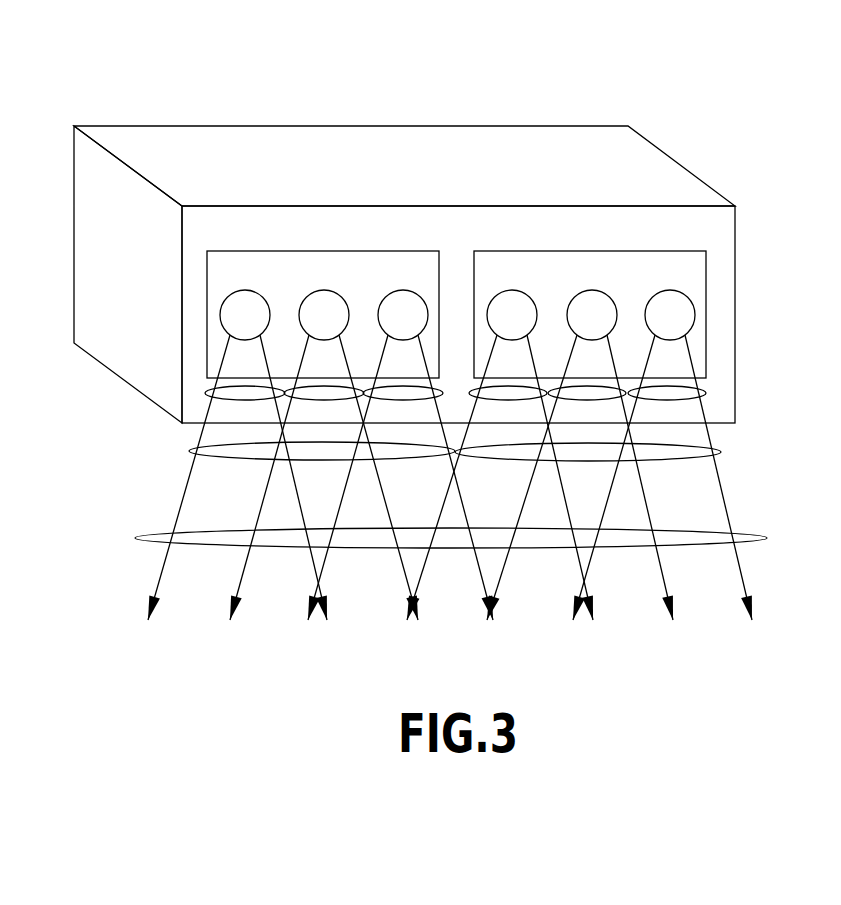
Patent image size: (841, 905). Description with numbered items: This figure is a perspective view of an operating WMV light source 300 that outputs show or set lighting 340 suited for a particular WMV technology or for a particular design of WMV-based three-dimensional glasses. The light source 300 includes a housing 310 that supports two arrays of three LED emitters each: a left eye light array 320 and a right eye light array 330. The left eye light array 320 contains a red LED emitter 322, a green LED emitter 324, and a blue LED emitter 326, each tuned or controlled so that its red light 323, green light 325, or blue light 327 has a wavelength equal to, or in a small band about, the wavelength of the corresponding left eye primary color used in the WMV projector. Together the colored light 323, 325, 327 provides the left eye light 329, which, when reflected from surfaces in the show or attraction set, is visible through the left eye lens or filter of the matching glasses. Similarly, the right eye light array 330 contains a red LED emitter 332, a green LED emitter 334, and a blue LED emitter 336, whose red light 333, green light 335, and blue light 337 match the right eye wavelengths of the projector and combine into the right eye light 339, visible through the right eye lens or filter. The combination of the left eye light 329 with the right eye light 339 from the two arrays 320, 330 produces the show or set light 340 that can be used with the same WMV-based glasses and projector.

The WMV light source 300 is at (652, 66).
The housing 310 is at (473, 125).
The left eye light array 320 is at (297, 251).
The red LED emitter 322 is at (220, 314).
The red light 323 is at (207, 393).
The green LED emitter 324 is at (323, 290).
The green light 325 is at (290, 390).
The blue LED emitter 326 is at (400, 290).
The blue light 327 is at (386, 390).
The left eye light 329 is at (192, 452).
The right eye light array 330 is at (706, 251).
The red LED emitter 332 is at (512, 290).
The red light 333 is at (532, 342).
The green LED emitter 334 is at (590, 290).
The green light 335 is at (598, 390).
The blue LED emitter 336 is at (668, 290).
The blue light 337 is at (707, 393).
The right eye light 339 is at (720, 453).
The show or set light 340 is at (136, 538).